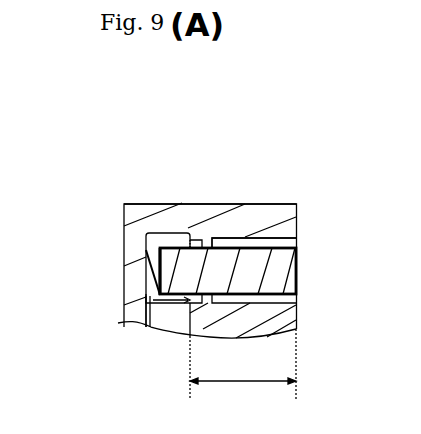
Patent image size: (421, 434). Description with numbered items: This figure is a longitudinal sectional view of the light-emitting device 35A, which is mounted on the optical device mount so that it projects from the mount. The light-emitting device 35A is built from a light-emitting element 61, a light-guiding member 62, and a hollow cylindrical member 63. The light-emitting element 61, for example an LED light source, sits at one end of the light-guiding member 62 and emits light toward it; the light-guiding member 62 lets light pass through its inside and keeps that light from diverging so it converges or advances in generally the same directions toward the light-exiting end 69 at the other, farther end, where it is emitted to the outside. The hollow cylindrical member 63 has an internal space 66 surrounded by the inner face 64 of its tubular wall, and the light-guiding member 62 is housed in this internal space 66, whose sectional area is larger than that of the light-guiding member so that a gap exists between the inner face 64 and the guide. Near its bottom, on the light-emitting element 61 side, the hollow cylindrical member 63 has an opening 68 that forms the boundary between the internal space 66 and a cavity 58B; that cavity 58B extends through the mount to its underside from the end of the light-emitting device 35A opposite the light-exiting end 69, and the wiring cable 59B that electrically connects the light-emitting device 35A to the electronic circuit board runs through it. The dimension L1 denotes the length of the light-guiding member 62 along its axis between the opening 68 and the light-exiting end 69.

The light-emitting device 35A is at (258, 152).
The light-emitting element 61 is at (147, 252).
The light-guiding member 62 is at (166, 249).
The hollow cylindrical member 63 is at (235, 215).
The inner face 64 is at (279, 243).
The internal space 66 is at (297, 241).
The opening 68 is at (152, 292).
The wiring cable 59B is at (147, 325).
The cavity 58B is at (177, 323).
The light-exiting end 69 is at (298, 276).
The length L1 is at (243, 378).